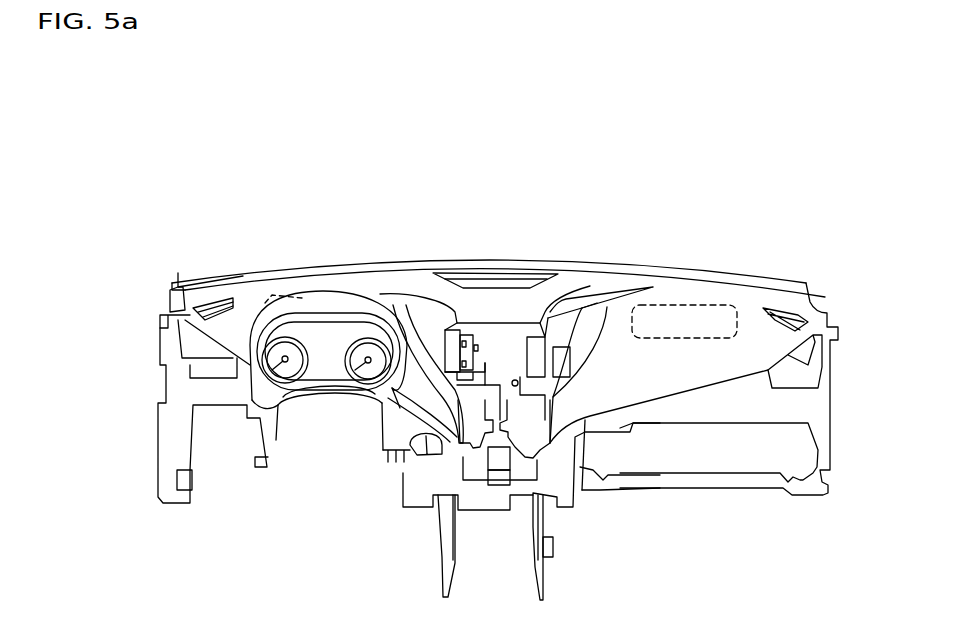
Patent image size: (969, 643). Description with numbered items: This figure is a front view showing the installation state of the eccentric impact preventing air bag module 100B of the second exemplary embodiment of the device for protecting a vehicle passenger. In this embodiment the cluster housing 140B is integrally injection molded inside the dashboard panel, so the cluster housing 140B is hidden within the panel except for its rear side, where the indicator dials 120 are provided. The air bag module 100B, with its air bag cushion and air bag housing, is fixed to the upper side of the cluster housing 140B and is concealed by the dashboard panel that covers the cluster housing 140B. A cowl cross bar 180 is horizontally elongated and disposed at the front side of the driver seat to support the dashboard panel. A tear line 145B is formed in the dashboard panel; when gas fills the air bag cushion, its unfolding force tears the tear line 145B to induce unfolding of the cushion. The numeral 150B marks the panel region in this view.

The eccentric impact preventing air bag module 100B is at (498, 436).
The indicator dials 120 is at (323, 366).
The cluster housing 140B is at (396, 396).
The tear line 145B is at (268, 292).
The crash pad upper panel 150B is at (413, 280).
The cowl cross bar 180 is at (528, 397).